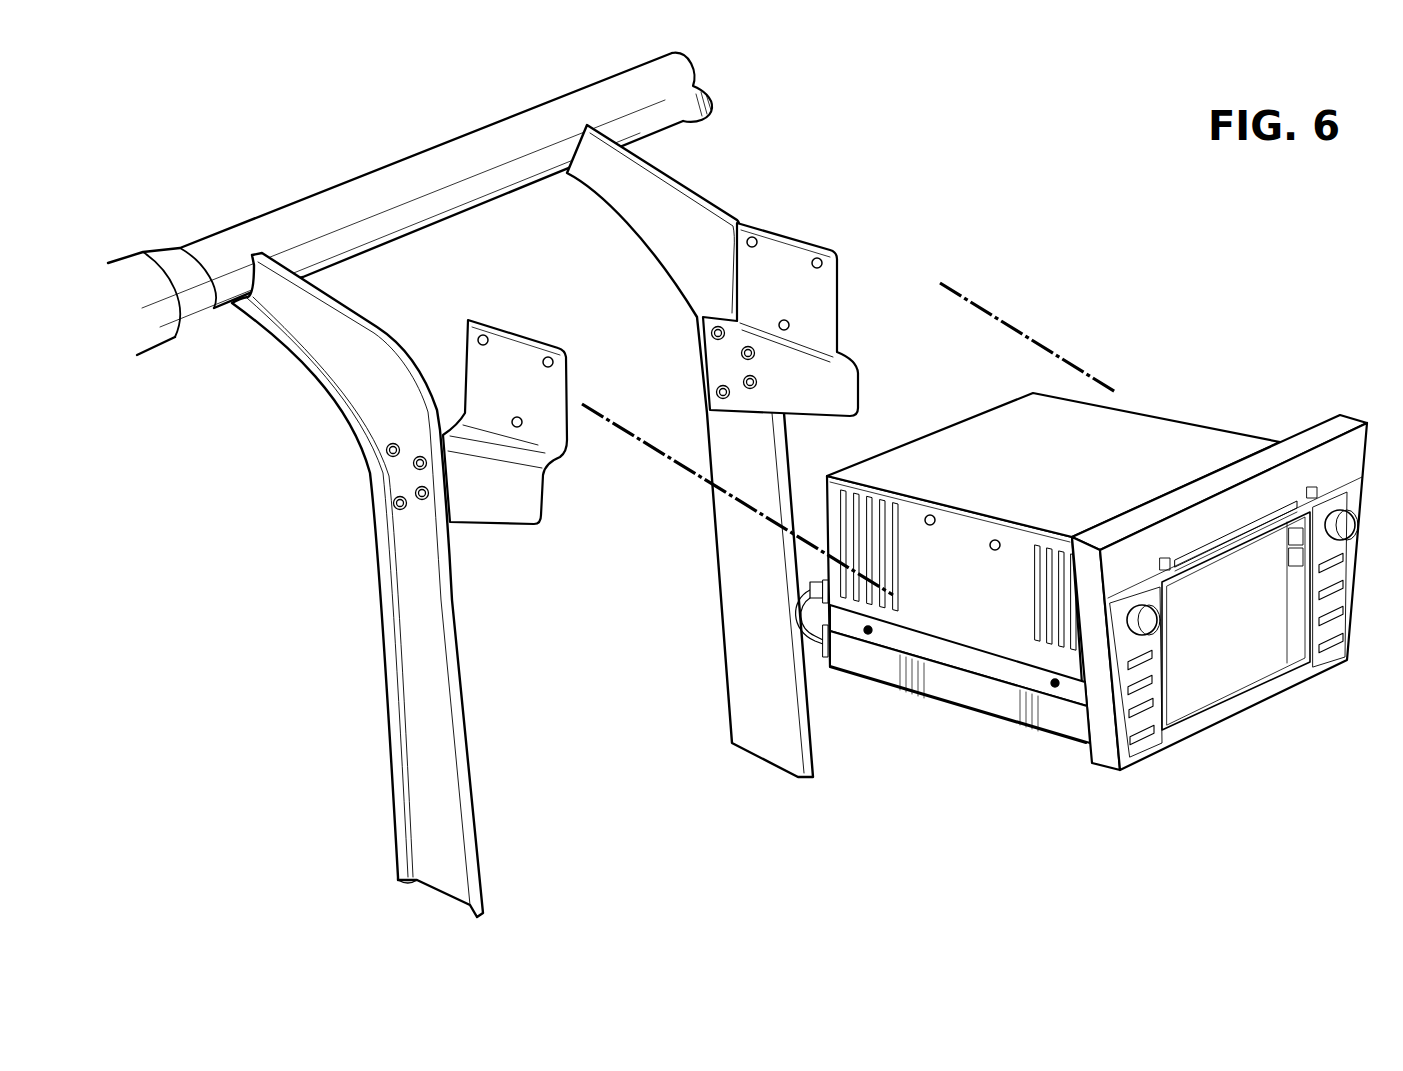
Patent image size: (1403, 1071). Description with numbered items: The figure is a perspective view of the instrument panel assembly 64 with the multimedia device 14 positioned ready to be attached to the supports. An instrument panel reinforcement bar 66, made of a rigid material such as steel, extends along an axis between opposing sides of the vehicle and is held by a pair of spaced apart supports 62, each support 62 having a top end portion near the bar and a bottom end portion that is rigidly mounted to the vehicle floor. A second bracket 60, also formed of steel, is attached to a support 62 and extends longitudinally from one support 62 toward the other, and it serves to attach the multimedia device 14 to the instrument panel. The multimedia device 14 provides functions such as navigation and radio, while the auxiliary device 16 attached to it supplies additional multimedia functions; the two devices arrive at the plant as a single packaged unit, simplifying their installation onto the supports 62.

The multimedia device 14 is at (1187, 447).
The auxiliary device 16 is at (982, 693).
The second bracket 60 is at (513, 354).
The support 62 is at (698, 207).
The instrument panel assembly 64 is at (987, 218).
The instrument panel reinforcement bar 66 is at (392, 190).